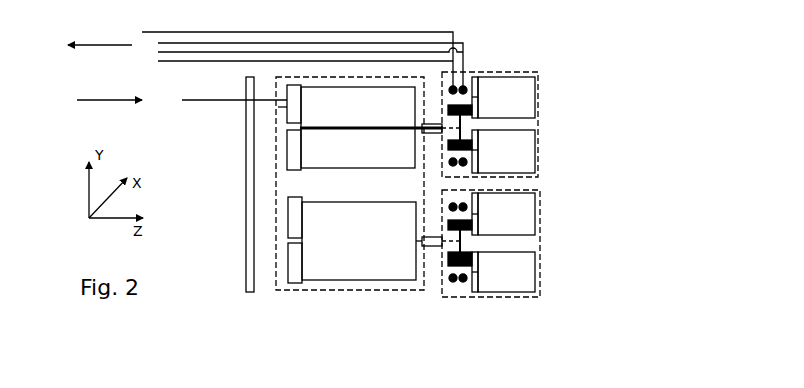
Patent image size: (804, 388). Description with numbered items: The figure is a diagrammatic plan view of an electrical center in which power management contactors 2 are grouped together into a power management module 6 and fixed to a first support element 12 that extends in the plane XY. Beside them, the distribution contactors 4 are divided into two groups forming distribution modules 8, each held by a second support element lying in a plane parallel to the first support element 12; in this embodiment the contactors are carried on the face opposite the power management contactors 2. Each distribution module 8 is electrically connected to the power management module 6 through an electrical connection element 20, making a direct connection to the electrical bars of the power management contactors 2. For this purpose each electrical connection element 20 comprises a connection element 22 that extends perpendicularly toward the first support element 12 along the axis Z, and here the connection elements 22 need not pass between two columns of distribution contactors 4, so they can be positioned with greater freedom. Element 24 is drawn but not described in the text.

The power management contactor 2 is at (367, 251).
The distribution contactor 4 is at (510, 281).
The power management module 6 is at (345, 292).
The distribution module 8 is at (520, 184).
The first support element 12 is at (246, 165).
The electrical connection element 20 is at (445, 144).
The connection element 22 is at (360, 126).
The connection line 24 is at (474, 108).